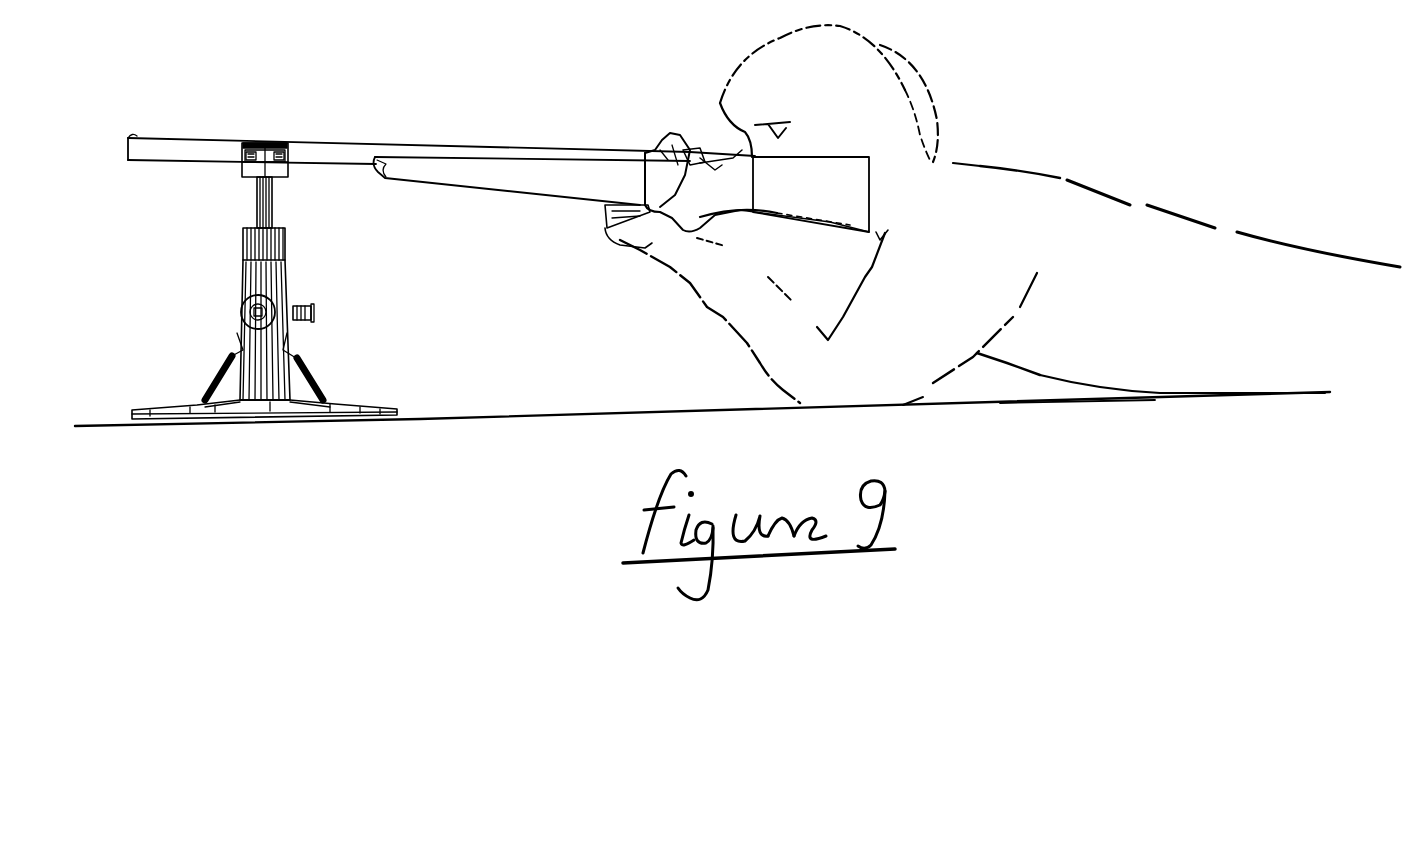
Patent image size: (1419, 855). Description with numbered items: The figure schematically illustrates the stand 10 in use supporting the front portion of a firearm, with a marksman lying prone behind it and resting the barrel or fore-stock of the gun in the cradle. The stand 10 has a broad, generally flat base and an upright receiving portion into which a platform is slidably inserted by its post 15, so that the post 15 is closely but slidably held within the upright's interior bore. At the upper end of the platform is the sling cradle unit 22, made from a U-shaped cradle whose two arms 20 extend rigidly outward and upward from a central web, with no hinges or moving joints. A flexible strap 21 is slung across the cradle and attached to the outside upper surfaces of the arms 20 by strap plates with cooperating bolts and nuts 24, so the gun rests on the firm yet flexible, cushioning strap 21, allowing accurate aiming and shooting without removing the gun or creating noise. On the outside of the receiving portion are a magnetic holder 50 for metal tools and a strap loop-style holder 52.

The stand 10 is at (360, 64).
The post 15 is at (257, 208).
The arms 20 is at (285, 165).
The flexible strap 21 is at (268, 143).
The sling cradle unit 22 is at (249, 131).
The bolts and nuts 24 is at (233, 162).
The magnetic holder 50 is at (270, 300).
The strap loop-style holder 52 is at (302, 305).